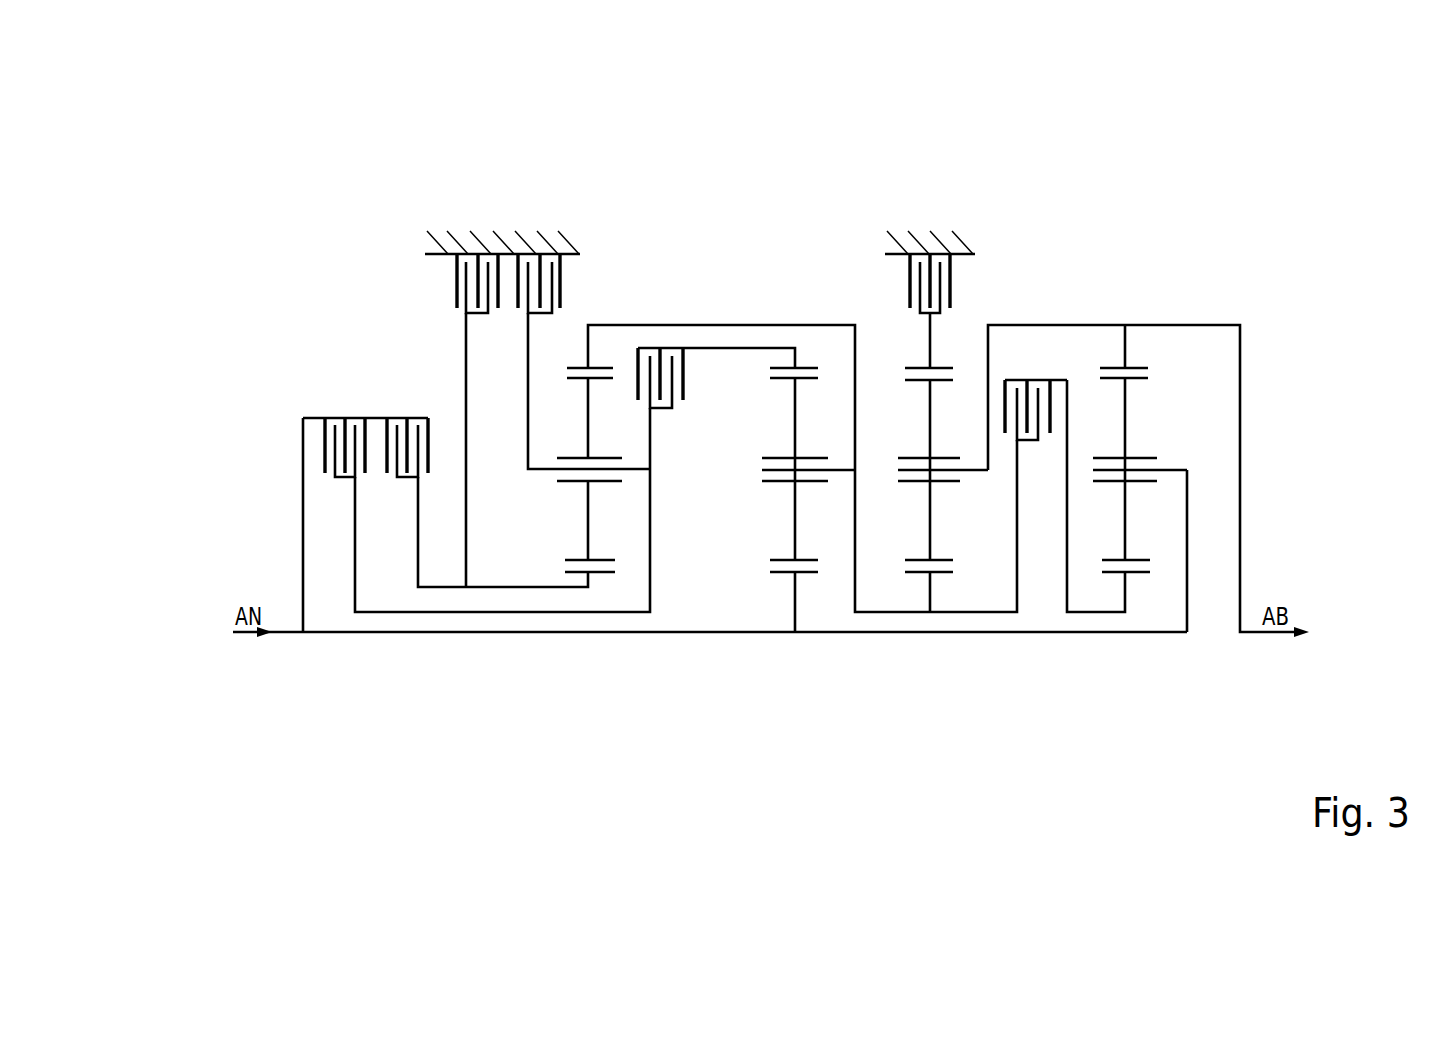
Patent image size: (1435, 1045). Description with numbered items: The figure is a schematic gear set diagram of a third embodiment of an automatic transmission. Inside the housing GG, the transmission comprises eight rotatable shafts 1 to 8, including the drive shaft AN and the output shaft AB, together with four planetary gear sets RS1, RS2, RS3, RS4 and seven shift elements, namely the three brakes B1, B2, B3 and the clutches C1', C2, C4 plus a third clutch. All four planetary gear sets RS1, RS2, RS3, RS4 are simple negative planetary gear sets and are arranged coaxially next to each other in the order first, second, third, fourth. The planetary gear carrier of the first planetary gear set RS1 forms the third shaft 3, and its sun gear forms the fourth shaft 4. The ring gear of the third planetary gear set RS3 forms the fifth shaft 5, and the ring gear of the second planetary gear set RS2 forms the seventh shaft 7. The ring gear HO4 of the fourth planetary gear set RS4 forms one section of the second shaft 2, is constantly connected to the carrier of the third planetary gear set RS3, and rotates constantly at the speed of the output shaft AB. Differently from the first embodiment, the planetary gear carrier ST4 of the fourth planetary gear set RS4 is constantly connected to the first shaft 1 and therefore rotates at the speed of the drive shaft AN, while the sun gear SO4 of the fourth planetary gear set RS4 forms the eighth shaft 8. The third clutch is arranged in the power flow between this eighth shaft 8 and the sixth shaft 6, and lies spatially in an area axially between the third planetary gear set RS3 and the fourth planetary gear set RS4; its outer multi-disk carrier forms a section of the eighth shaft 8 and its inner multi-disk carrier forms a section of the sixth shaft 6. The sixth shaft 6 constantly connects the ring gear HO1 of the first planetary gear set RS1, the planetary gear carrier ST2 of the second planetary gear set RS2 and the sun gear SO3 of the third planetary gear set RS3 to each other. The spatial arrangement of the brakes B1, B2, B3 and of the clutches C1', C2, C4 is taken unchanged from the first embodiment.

The first shaft 1 is at (412, 636).
The second shaft 2 is at (1243, 513).
The third shaft 3 is at (545, 473).
The fourth shaft 4 is at (497, 588).
The fifth shaft 5 is at (928, 340).
The sixth shaft 6 is at (637, 325).
The seventh shaft 7 is at (717, 347).
The eighth shaft 8 is at (1097, 612).
The housing GG is at (515, 247).
The first brake B1 is at (573, 363).
The second brake B2 is at (443, 282).
The third brake B3 is at (960, 277).
The first clutch C1' is at (676, 559).
The second clutch C2 is at (345, 413).
The fourth clutch C4 is at (407, 412).
The first planetary gear set RS1 is at (609, 496).
The second planetary gear set RS2 is at (759, 493).
The third planetary gear set RS3 is at (897, 493).
The fourth planetary gear set RS4 is at (1156, 494).
The ring gear of the first planetary gear set HO1 is at (567, 282).
The ring gear of the fourth planetary gear set HO4 is at (1108, 367).
The planetary gear carrier of the second planetary gear set ST2 is at (840, 467).
The planetary gear carrier of the fourth planetary gear set ST4 is at (1170, 467).
The sun gear of the third planetary gear set SO3 is at (937, 573).
The sun gear of the fourth planetary gear set SO4 is at (1137, 573).